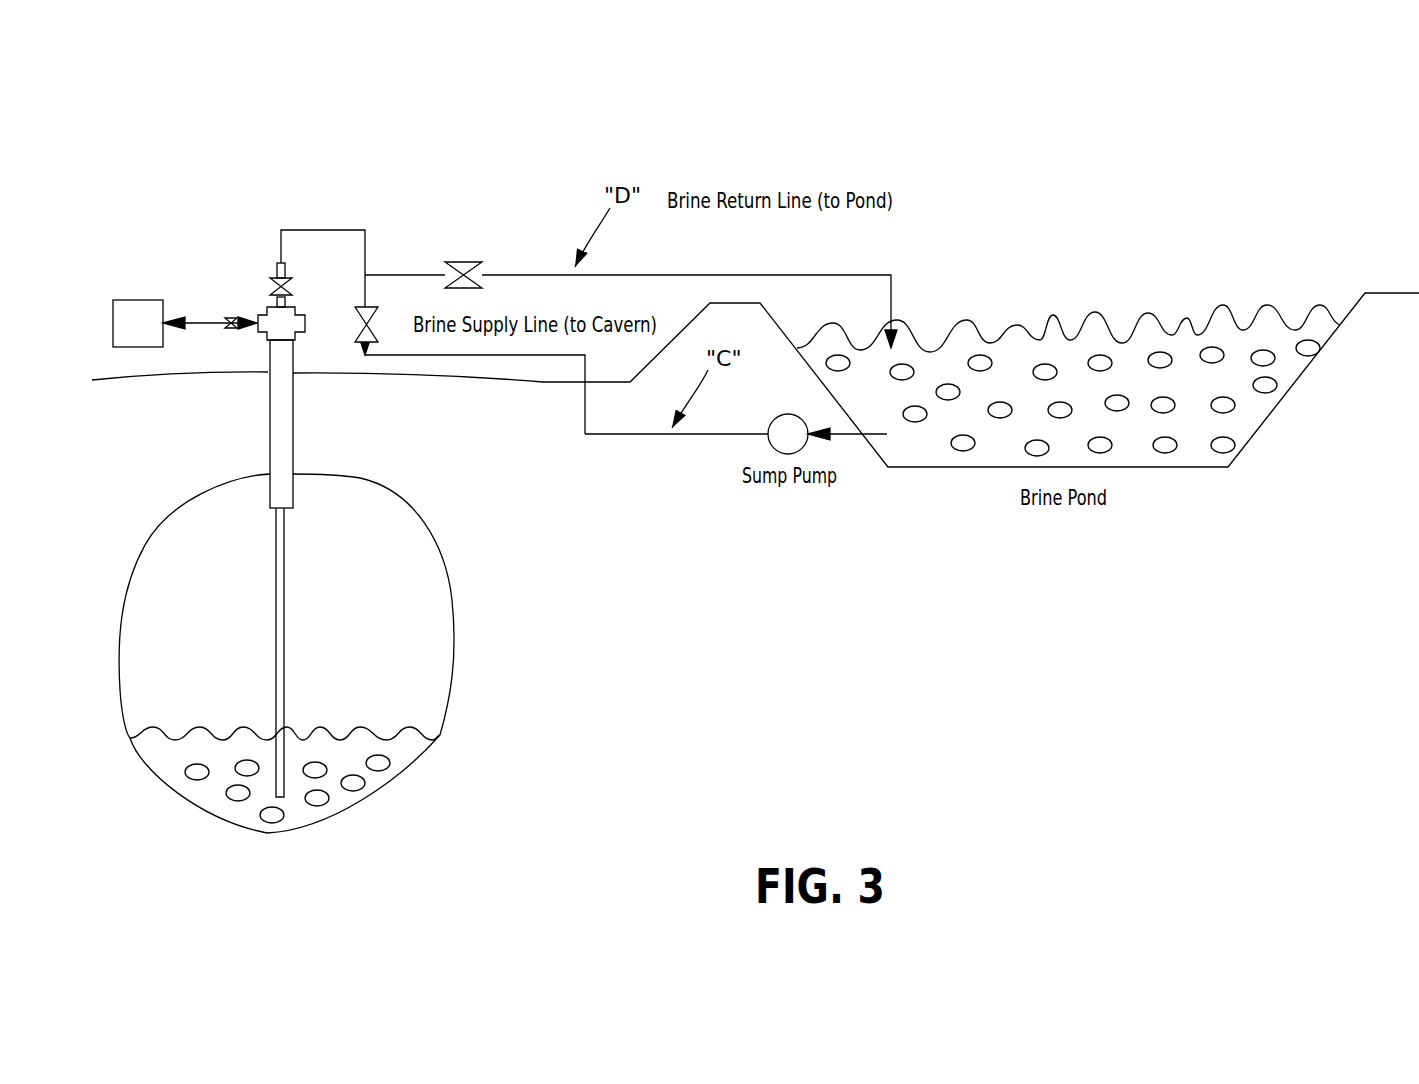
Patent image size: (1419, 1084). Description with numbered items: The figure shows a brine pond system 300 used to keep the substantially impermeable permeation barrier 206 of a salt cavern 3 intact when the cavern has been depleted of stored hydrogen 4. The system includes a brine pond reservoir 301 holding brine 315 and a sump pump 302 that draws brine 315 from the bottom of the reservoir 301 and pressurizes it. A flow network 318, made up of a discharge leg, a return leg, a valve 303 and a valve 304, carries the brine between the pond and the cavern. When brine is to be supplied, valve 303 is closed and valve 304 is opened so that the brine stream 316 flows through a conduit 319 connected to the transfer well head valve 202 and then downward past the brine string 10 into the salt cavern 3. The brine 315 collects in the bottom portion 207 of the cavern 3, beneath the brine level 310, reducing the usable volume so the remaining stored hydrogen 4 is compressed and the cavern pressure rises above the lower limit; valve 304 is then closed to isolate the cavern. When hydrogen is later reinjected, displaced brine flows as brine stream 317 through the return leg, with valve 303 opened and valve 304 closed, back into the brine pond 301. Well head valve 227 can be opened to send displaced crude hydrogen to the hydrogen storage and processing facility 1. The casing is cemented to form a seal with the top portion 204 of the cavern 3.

The hydrogen storage and processing facility 1 is at (131, 336).
The salt cavern 3 is at (468, 677).
The stored hydrogen 4 is at (361, 620).
The brine string 10 is at (284, 692).
The transfer well head valve 202 is at (262, 271).
The top portion of the cavern 204 is at (293, 473).
The substantially impermeable permeation barrier 206 is at (423, 537).
The bottom portion of the cavern 207 is at (280, 833).
The well head valve 227 is at (235, 316).
The brine pond system 300 is at (810, 162).
The brine pond reservoir 301 is at (1192, 468).
The sump pump 302 is at (800, 440).
The valve 303 is at (463, 273).
The valve 304 is at (368, 322).
The brine level in cavern 310 is at (387, 735).
The brine 315 is at (908, 457).
The brine stream 316 is at (620, 434).
The brine stream 317 is at (722, 275).
The flow network 318 is at (578, 408).
The conduit 319 is at (323, 230).